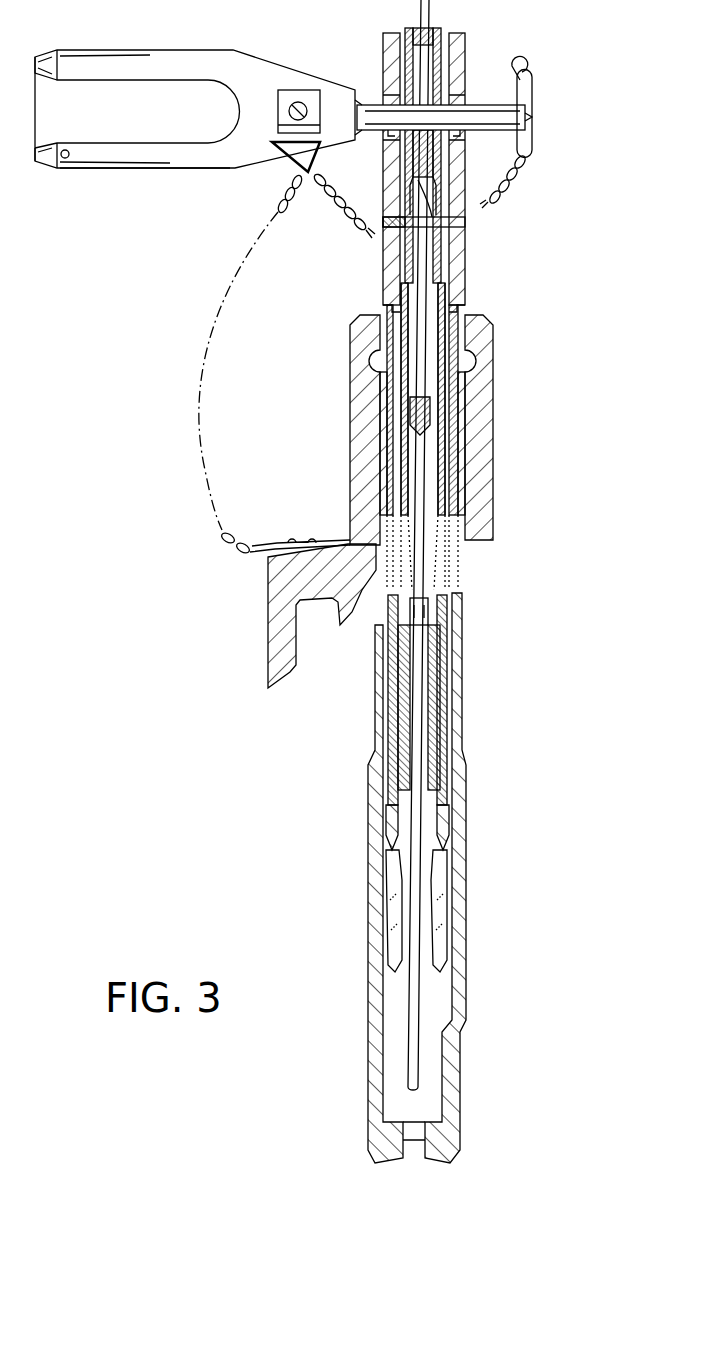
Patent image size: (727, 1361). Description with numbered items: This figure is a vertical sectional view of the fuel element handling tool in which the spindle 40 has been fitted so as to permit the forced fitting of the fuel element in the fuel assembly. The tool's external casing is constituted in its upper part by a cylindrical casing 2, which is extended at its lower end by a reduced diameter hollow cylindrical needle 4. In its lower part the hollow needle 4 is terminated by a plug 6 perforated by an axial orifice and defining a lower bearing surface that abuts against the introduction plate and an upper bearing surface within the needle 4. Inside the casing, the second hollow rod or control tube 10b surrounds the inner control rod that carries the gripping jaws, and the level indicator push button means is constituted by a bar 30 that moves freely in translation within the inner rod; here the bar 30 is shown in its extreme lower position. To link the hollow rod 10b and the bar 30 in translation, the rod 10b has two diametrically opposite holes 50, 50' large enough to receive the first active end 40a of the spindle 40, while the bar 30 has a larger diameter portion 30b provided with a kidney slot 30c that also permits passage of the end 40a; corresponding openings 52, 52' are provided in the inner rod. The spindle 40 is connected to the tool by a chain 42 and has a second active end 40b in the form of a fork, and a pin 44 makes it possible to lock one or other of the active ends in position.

The cylindrical casing 2 is at (495, 450).
The hollow cylindrical needle 4 is at (468, 682).
The plug 6 is at (460, 1110).
The second hollow rod or control tube 10b is at (393, 275).
The bar 30 is at (422, 6).
The larger diameter portion 30b is at (428, 213).
The kidney slot 30c is at (432, 56).
The spindle 40 is at (284, 62).
The first active end 40a is at (538, 117).
The second active end 40b is at (100, 178).
The chain 42 is at (278, 200).
The pin 44 is at (534, 85).
The hole 50 is at (364, 157).
The hole 50' is at (519, 166).
The opening 52 is at (366, 99).
The opening 52' is at (522, 76).